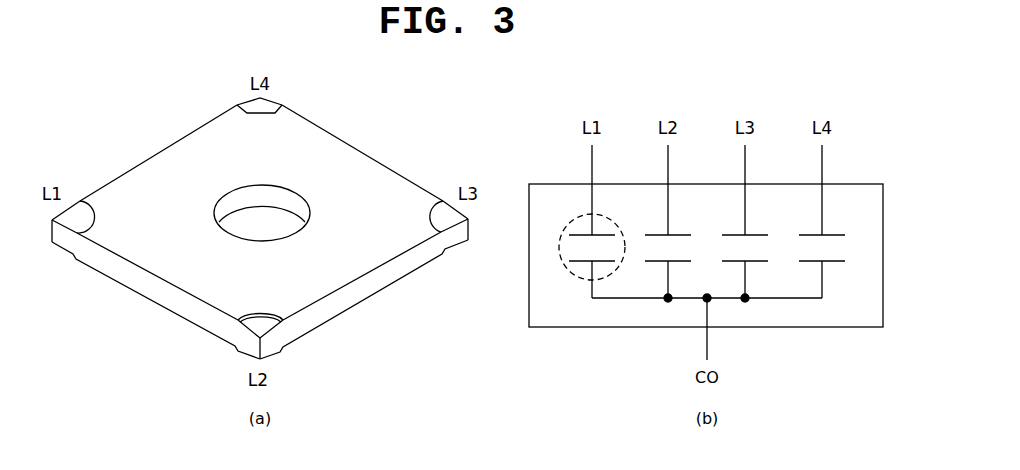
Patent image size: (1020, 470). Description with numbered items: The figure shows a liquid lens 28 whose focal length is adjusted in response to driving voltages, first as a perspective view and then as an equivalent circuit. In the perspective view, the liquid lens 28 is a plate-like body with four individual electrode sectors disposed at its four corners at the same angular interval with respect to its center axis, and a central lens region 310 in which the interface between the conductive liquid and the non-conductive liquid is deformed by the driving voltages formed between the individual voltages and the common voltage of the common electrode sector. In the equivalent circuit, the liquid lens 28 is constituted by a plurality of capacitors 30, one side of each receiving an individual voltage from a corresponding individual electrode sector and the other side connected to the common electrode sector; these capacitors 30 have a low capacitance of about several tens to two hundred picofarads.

The liquid lens 28 is at (172, 272).
The lens region 310 is at (258, 218).
The capacitors 30 is at (572, 220).